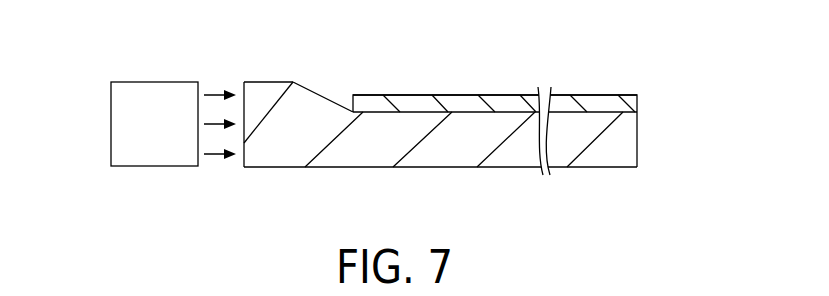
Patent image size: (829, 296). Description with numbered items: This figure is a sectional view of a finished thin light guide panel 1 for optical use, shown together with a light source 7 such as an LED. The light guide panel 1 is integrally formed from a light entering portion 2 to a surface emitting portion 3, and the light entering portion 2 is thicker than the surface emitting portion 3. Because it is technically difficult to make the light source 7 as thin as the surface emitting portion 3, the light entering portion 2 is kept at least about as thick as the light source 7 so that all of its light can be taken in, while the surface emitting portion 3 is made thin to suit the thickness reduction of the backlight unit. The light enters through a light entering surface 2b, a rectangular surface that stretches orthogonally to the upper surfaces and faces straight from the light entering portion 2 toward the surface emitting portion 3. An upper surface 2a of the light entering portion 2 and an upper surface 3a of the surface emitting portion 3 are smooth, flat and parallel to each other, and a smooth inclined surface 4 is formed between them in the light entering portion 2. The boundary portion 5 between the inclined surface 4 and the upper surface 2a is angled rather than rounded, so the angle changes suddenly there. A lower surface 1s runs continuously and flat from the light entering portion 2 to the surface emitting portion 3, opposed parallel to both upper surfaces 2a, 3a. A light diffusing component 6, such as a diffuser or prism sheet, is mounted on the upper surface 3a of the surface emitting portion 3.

The light guide panel 1 is at (643, 145).
The lower surface 1s is at (402, 168).
The light entering portion 2 is at (266, 93).
The upper surface of the light entering portion 2a is at (253, 82).
The light entering surface 2b is at (243, 82).
The surface emitting portion 3 is at (458, 127).
The upper surface of the surface emitting portion 3a is at (503, 112).
The inclined surface 4 is at (328, 100).
The boundary portion 5 is at (296, 80).
The light diffusing component 6 is at (588, 95).
The light source 7 is at (111, 117).